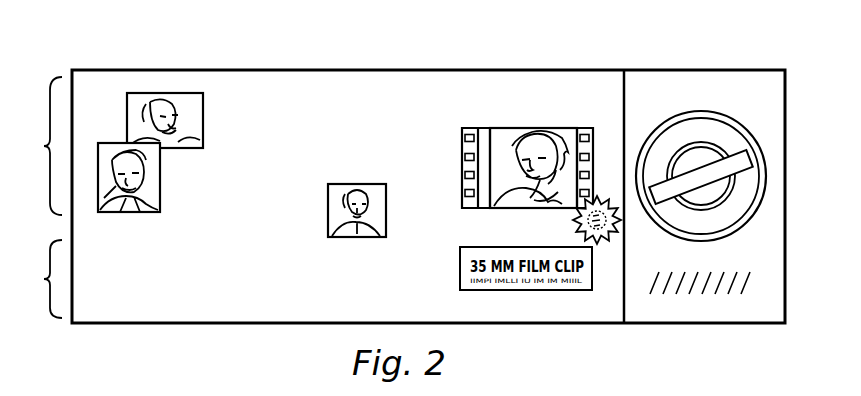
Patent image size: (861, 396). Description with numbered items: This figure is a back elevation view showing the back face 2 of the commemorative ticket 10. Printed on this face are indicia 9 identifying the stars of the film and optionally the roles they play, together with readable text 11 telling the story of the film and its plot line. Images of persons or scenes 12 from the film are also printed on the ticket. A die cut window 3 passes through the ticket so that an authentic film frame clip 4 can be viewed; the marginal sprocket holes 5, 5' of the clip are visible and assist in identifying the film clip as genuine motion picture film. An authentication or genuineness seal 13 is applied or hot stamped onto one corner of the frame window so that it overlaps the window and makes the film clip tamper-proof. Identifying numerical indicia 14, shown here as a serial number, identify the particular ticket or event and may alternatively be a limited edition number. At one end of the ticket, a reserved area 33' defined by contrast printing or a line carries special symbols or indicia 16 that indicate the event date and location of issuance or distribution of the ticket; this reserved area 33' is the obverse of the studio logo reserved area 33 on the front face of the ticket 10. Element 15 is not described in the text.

The commemorative ticket 10 is at (704, 60).
The indicia identifying the stars 9 is at (41, 146).
The text 11 is at (208, 279).
The images of persons or scenes 12 is at (100, 143).
The back face 2 is at (415, 110).
The marginal sprocket holes 5' is at (463, 152).
The die cut window 3 is at (486, 128).
The film frame clip 4 is at (510, 128).
The marginal sprocket holes 5 is at (585, 152).
The authentication or genuineness seal 13 is at (578, 226).
The reserved area 33' is at (641, 180).
The reserved area 33 is at (704, 196).
The special symbols or indicia 16 is at (668, 120).
The identifying indicia 14 is at (650, 283).
The cancellation slashes 15 is at (756, 281).